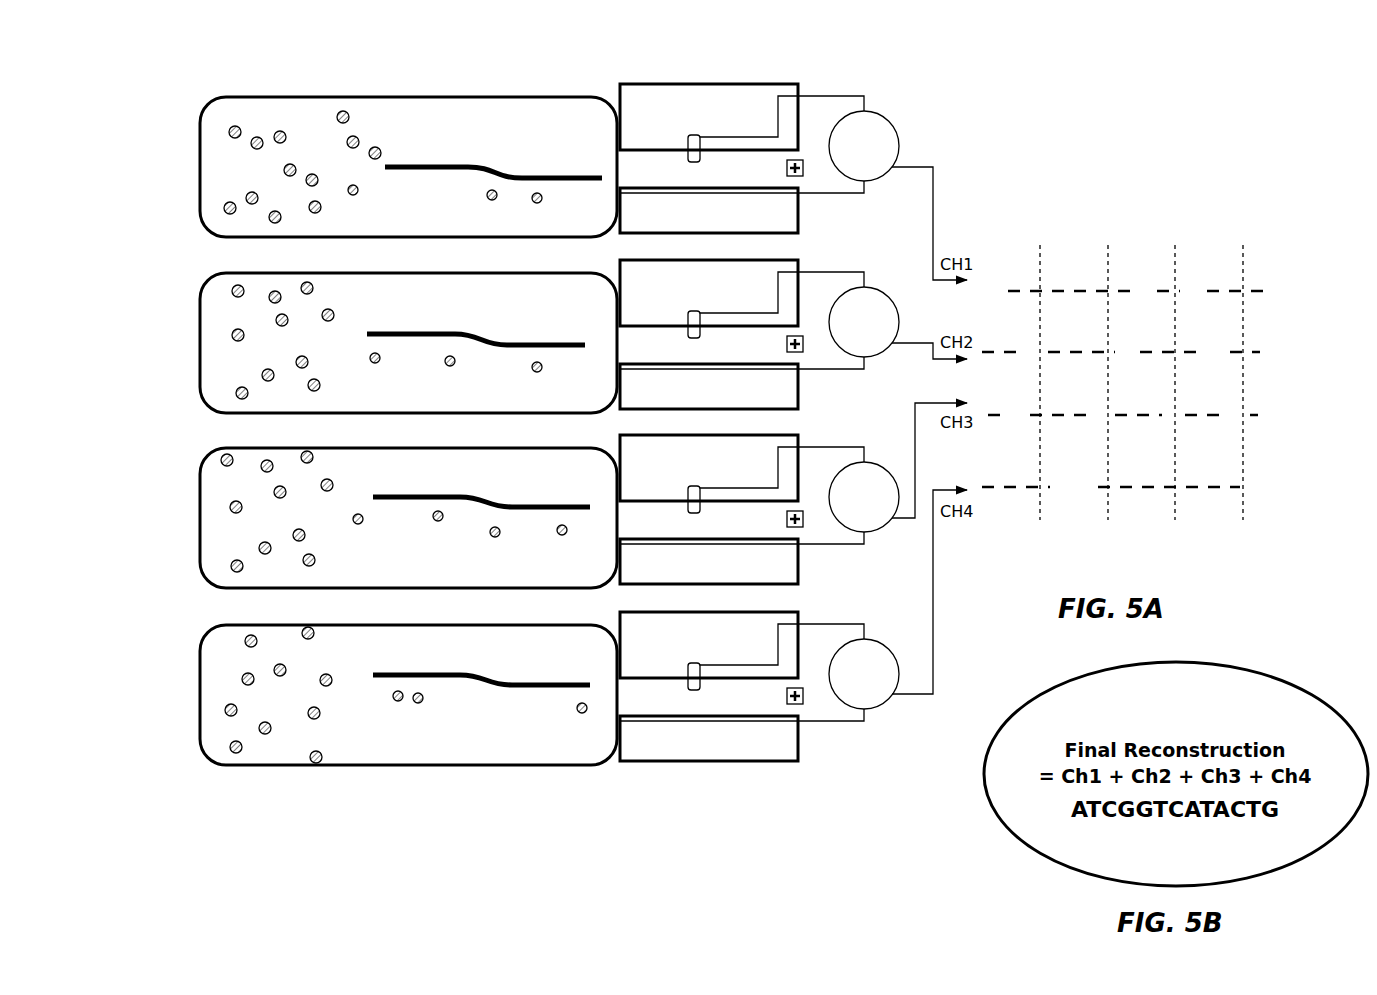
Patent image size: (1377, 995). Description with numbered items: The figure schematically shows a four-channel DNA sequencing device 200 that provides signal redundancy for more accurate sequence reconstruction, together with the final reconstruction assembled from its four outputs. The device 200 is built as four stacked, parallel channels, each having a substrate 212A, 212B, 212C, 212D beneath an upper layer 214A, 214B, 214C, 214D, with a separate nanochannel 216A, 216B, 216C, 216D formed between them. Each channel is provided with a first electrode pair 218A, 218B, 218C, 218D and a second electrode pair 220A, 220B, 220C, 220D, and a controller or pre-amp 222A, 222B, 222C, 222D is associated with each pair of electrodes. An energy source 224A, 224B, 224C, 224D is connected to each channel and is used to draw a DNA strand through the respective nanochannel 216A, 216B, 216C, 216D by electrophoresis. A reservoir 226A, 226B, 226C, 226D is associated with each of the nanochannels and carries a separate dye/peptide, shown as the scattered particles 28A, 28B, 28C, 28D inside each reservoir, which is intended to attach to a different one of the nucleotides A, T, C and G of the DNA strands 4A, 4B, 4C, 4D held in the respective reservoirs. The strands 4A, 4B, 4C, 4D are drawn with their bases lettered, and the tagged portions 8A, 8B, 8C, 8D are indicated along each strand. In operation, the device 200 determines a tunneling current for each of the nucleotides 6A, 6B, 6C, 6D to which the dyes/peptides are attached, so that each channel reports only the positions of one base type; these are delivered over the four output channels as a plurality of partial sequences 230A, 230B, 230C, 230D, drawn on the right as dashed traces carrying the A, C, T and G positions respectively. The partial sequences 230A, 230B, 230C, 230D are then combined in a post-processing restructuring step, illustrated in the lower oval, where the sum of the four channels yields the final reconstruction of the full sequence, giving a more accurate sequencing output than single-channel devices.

The DNA sequencing device 200 is at (925, 123).
The DNA strand 4A is at (505, 163).
The DNA strand 4B is at (488, 331).
The DNA strand 4C is at (497, 494).
The DNA strand 4D is at (497, 672).
The nucleotides 6A is at (424, 200).
The nucleotides 6B is at (406, 372).
The nucleotides 6C is at (411, 533).
The nucleotides 6D is at (411, 712).
The probe strand 8A is at (440, 164).
The probe strand 8B is at (416, 331).
The probe strand 8C is at (414, 494).
The probe strand 8D is at (413, 672).
The labeled nucleotides 28A is at (246, 198).
The labeled nucleotides 28B is at (262, 375).
The labeled nucleotides 28C is at (259, 548).
The labeled nucleotides 28D is at (259, 728).
The substrate 212A is at (709, 210).
The substrate 212B is at (709, 386).
The substrate 212C is at (709, 561).
The substrate 212D is at (709, 738).
The upper layer 214A is at (709, 117).
The upper layer 214B is at (709, 293).
The upper layer 214C is at (709, 468).
The upper layer 214D is at (709, 645).
The nanochannel 216A is at (630, 178).
The nanochannel 216B is at (617, 355).
The nanochannel 216C is at (623, 527).
The nanochannel 216D is at (623, 705).
The first electrode pair 218A is at (690, 135).
The first electrode pair 218B is at (744, 305).
The first electrode pair 218C is at (744, 480).
The first electrode pair 218D is at (744, 657).
The second electrode pair 220A is at (774, 187).
The second electrode pair 220B is at (742, 352).
The second electrode pair 220C is at (742, 527).
The second electrode pair 220D is at (742, 704).
The controller or pre-amp 222A is at (898, 195).
The controller or pre-amp 222B is at (898, 323).
The controller or pre-amp 222C is at (898, 467).
The controller or pre-amp 222D is at (898, 599).
The energy source 224A is at (803, 168).
The energy source 224B is at (852, 366).
The energy source 224C is at (852, 541).
The energy source 224D is at (852, 718).
The reservoir 226A is at (200, 180).
The reservoir 226B is at (200, 362).
The reservoir 226C is at (200, 549).
The reservoir 226D is at (200, 727).
The partial sequence 230A is at (1252, 276).
The partial sequence 230B is at (1252, 338).
The partial sequence 230C is at (1252, 400).
The partial sequence 230D is at (1277, 470).